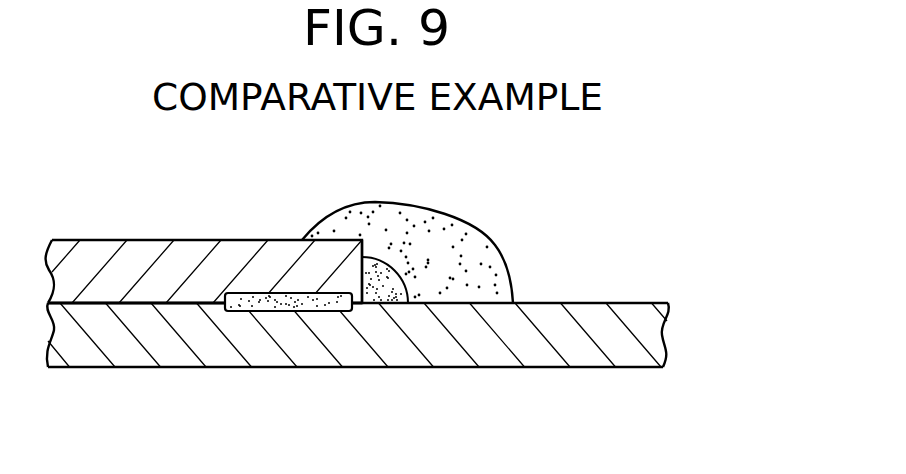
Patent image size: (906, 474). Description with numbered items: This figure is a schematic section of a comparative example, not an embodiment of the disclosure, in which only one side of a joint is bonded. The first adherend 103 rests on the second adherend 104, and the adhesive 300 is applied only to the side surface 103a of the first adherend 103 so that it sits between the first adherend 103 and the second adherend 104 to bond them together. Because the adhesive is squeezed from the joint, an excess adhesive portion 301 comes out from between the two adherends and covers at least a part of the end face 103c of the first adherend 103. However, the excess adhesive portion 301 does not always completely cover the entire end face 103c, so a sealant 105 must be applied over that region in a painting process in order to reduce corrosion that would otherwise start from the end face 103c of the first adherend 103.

The first adherend 103 is at (147, 252).
The side surface 103a is at (91, 304).
The end face 103c is at (368, 248).
The second adherend 104 is at (222, 355).
The sealant 105 is at (492, 268).
The adhesive 300 is at (308, 312).
The excess adhesive portion 301 is at (390, 288).